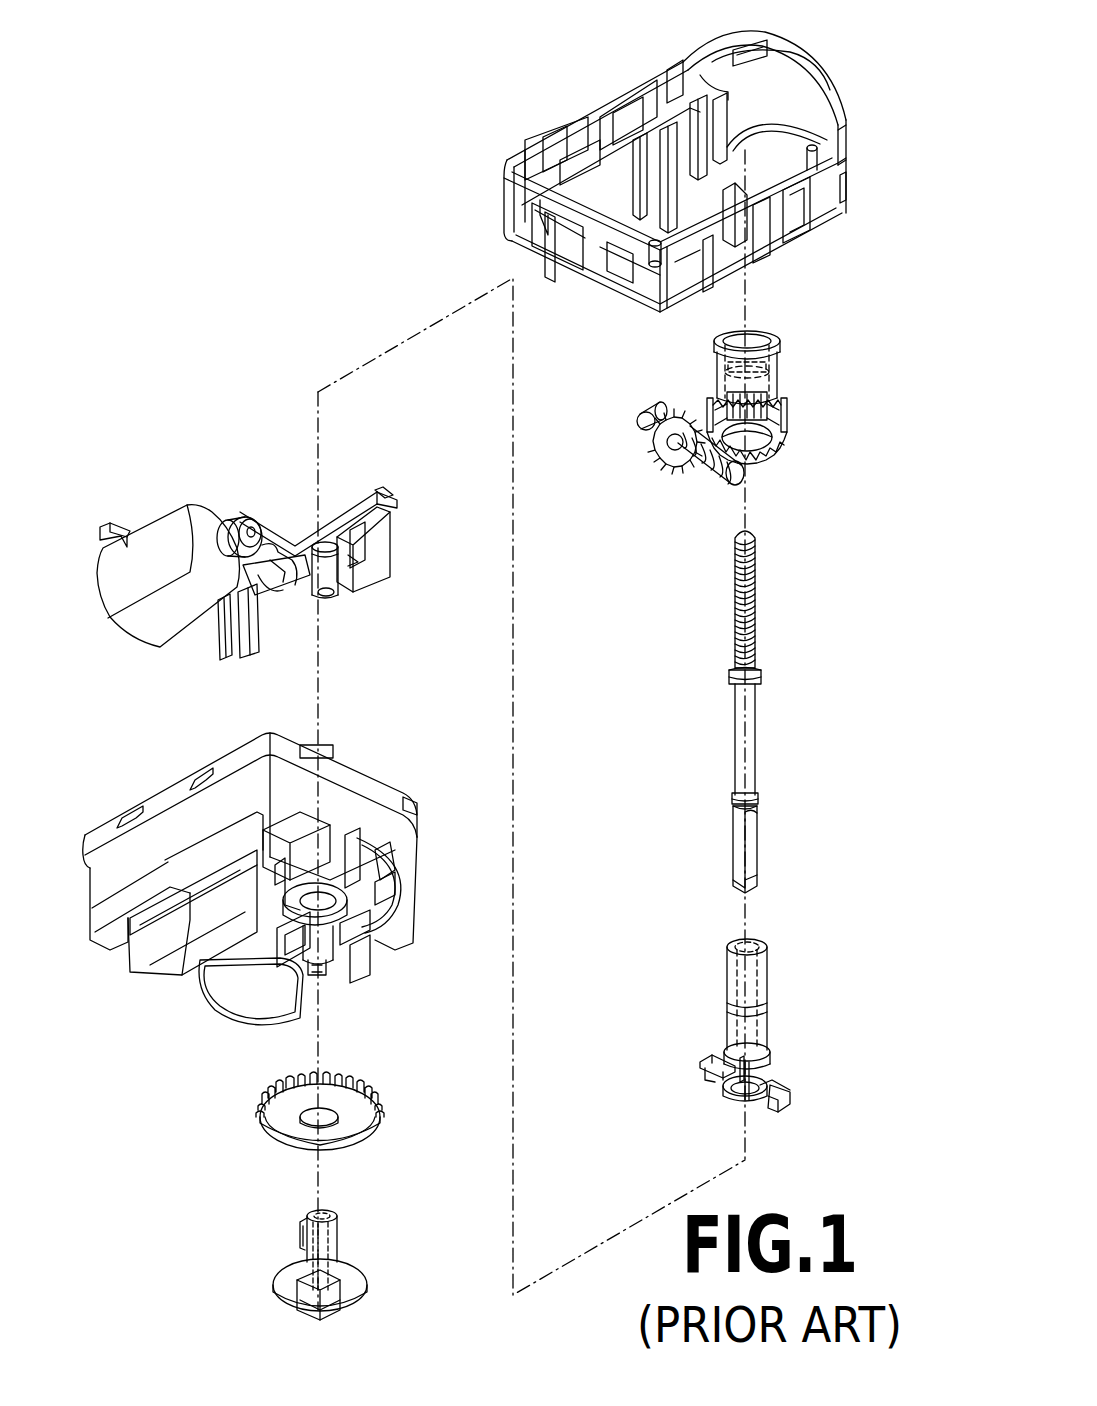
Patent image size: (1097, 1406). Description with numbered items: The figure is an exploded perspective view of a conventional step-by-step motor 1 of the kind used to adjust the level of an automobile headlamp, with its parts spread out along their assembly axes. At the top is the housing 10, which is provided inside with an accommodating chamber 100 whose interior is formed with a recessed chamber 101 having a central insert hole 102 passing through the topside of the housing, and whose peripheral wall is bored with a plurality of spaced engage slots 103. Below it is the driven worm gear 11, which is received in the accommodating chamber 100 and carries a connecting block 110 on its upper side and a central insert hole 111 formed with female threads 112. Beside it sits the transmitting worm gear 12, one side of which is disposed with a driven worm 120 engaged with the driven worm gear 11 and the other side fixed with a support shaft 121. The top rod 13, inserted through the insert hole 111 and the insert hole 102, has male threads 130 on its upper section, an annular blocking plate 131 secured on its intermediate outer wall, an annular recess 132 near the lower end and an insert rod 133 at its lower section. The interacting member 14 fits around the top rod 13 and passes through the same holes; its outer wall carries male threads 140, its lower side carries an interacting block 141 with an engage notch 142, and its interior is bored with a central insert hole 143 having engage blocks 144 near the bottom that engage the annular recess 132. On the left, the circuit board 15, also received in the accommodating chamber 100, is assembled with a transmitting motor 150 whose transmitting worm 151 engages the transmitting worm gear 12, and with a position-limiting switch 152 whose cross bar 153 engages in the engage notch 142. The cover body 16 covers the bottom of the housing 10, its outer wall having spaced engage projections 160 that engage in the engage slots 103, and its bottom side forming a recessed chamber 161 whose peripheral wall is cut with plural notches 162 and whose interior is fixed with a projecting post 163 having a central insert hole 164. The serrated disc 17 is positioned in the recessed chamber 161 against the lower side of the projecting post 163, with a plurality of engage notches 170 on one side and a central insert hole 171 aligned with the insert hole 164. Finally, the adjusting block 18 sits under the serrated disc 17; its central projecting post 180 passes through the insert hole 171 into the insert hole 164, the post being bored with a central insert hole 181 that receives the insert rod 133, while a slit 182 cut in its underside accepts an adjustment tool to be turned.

The step-by-step motor 1 is at (335, 303).
The housing 10 is at (505, 193).
The accommodating chamber 100 is at (637, 228).
The recessed chamber 101 is at (815, 165).
The central insert hole 102 is at (760, 60).
The engage slots 103 is at (556, 140).
The driven worm gear 11 is at (783, 416).
The connecting block 110 is at (700, 373).
The central insert hole 111 is at (768, 446).
The female threads 112 is at (778, 376).
The transmitting worm gear 12 is at (670, 462).
The driven worm 120 is at (720, 470).
The support shaft 121 is at (648, 433).
The top rod 13 is at (750, 740).
The male threads 130 is at (752, 601).
The annular blocking plate 131 is at (761, 673).
The annular recess 132 is at (760, 797).
The insert rod 133 is at (755, 859).
The interacting member 14 is at (770, 985).
The male threads 140 is at (767, 1007).
The interacting block 141 is at (790, 1083).
The engage notch 142 is at (780, 1115).
The central insert hole 143 is at (770, 942).
The engage blocks 144 is at (732, 1092).
The circuit board 15 is at (275, 530).
The transmitting motor 150 is at (157, 540).
The transmitting worm 151 is at (229, 520).
The position-limiting switch 152 is at (390, 545).
The cross bar 153 is at (340, 562).
The cover body 16 is at (115, 865).
The engage projections 160 is at (197, 775).
The recessed chamber 161 is at (375, 920).
The notches 162 is at (380, 870).
The projecting post 163 is at (340, 915).
The central insert hole 164 is at (325, 915).
The serrated disc 17 is at (355, 1125).
The engage notches 170 is at (360, 1084).
The insert hole 171 is at (305, 1122).
The adjusting block 18 is at (350, 1278).
The projecting post 180 is at (340, 1246).
The central insert hole 181 is at (335, 1215).
The slit 182 is at (332, 1300).